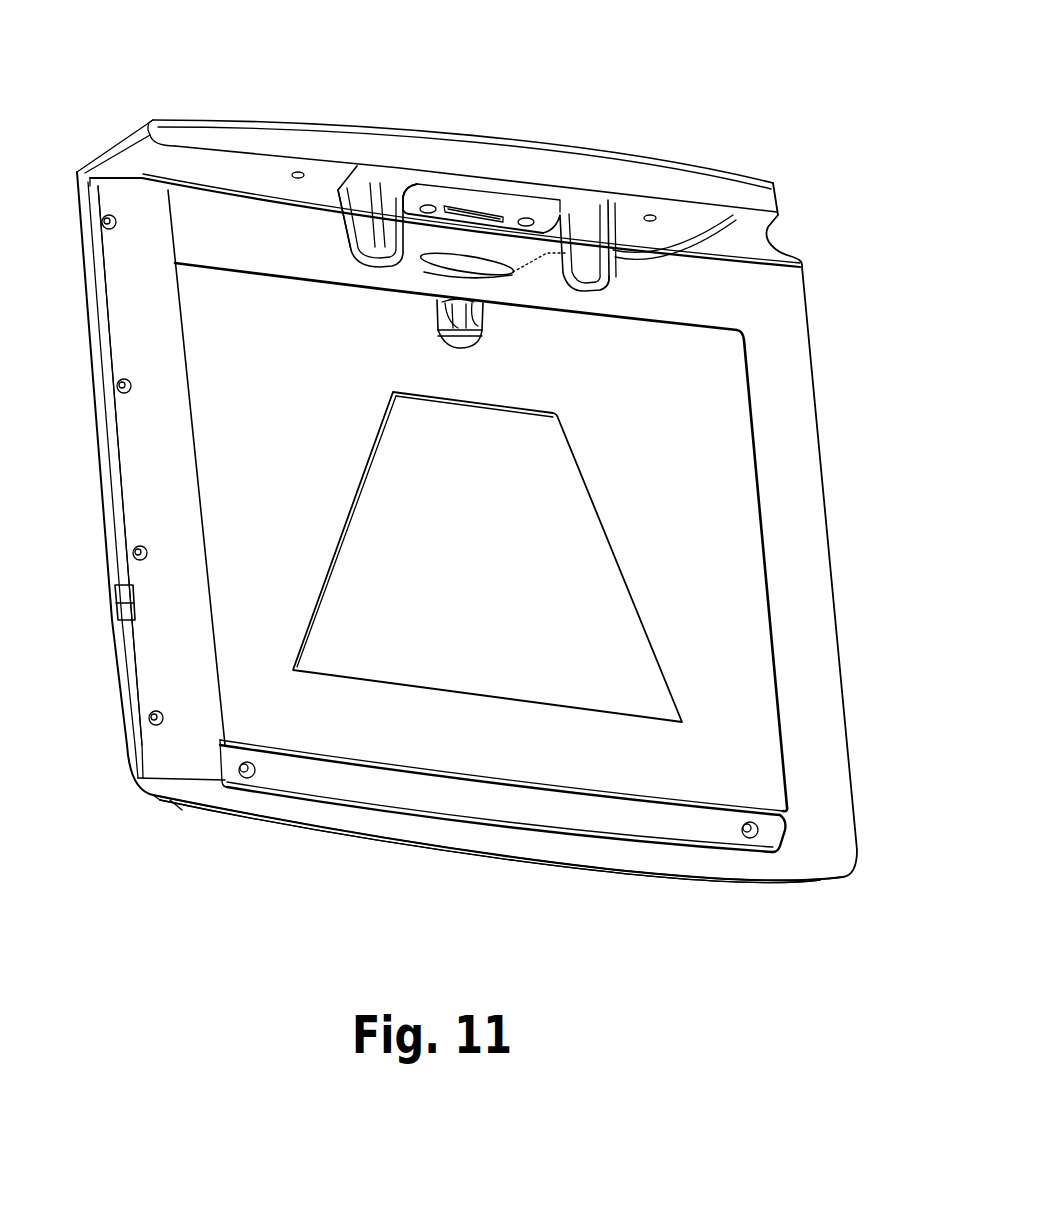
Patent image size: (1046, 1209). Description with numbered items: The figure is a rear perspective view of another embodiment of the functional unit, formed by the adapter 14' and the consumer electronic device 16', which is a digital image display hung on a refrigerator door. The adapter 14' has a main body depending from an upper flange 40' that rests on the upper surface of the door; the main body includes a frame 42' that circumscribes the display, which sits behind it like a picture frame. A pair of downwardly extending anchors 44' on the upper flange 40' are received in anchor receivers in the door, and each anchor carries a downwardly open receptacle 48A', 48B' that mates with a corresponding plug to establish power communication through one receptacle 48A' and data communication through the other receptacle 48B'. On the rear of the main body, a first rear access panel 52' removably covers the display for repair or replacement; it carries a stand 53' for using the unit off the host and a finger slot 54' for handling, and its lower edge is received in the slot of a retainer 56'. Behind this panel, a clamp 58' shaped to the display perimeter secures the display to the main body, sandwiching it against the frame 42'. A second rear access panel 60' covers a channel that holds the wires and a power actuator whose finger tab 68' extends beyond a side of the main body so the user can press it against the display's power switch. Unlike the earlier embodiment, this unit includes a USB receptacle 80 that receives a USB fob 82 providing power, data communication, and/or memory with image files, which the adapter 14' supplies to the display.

The adapter 14' is at (467, 446).
The consumer electronic device 16' is at (467, 446).
The upper flange 40' is at (458, 180).
The frame 42' is at (465, 839).
The anchors 44' is at (496, 179).
The receptacle 48A' is at (313, 160).
The receptacle 48B' is at (673, 190).
The first rear access panel 52' is at (541, 500).
The stand 53' is at (605, 557).
The finger slot 54' is at (679, 369).
The retainer 56' is at (502, 843).
The clamp 58' is at (669, 343).
The second rear access panel 60' is at (96, 465).
The finger tab 68' is at (76, 621).
The USB receptacle 80 is at (546, 212).
The USB fob 82 is at (474, 260).